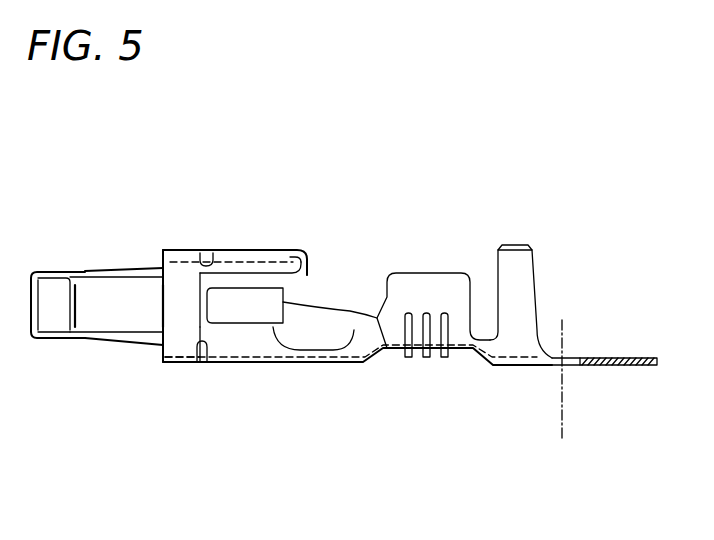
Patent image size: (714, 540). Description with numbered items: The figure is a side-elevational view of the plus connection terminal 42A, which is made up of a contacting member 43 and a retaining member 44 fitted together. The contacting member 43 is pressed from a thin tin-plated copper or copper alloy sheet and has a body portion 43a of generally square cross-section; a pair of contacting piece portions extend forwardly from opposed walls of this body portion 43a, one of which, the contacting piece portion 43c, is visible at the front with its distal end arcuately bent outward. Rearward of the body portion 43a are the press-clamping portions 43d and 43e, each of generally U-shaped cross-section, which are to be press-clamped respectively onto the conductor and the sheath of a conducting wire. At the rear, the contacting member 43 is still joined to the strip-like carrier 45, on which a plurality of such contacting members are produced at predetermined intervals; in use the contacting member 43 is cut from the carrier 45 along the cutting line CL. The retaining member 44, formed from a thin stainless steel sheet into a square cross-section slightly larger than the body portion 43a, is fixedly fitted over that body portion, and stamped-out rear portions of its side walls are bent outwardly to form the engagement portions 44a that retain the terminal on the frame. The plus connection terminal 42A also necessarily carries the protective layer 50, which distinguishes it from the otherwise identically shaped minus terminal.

The contacting member 43 is at (362, 343).
The body portion 43a is at (173, 265).
The contacting piece portion 43c is at (53, 345).
The press-clamping portion 43d is at (434, 290).
The press-clamping portion 43e is at (513, 275).
The retaining member 44 is at (127, 292).
The engagement portion 44a is at (240, 313).
The carrier 45 is at (643, 367).
The protective layer 50 is at (222, 257).
The plus connection terminal 42A is at (275, 246).
The cutting line CL is at (560, 408).